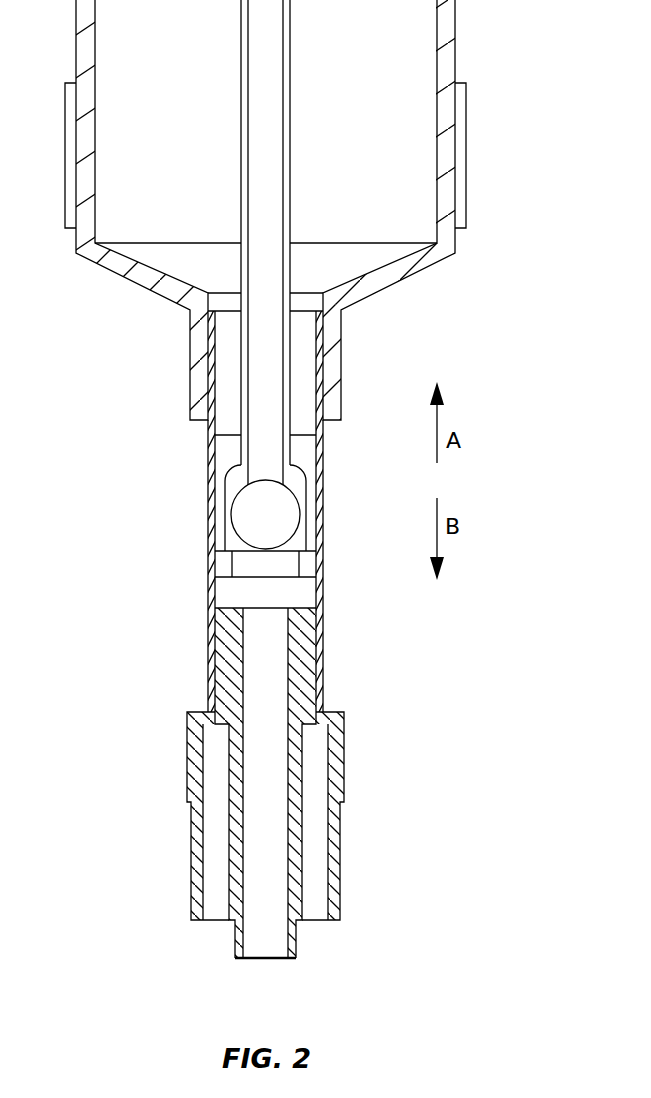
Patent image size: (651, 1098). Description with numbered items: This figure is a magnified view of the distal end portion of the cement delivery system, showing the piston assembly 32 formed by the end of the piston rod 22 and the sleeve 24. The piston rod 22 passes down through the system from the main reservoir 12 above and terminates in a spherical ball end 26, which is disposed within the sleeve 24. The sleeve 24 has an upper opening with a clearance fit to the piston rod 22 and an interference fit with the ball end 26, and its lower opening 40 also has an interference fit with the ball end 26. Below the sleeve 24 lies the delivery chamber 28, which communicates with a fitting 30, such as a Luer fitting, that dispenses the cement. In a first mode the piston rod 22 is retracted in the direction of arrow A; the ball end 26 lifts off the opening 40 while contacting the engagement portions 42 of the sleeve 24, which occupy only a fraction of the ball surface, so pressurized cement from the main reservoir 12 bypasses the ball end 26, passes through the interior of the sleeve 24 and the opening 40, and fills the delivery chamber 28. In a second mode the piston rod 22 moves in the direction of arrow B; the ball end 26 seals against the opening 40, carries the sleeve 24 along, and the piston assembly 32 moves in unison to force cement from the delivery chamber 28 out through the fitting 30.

The main reservoir 12 is at (455, 47).
The piston rod 22 is at (266, 359).
The sleeve 24 is at (309, 503).
The ball end 26 is at (248, 521).
The delivery chamber 28 is at (238, 596).
The fitting 30 is at (190, 834).
The piston assembly 32 is at (322, 572).
The opening 40 is at (276, 563).
The engagement portions 42 is at (223, 453).